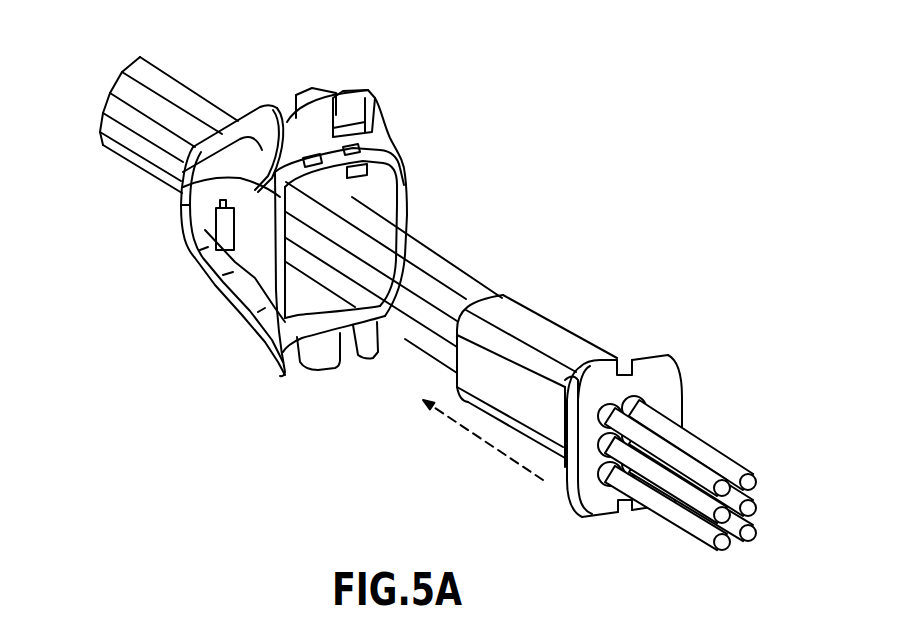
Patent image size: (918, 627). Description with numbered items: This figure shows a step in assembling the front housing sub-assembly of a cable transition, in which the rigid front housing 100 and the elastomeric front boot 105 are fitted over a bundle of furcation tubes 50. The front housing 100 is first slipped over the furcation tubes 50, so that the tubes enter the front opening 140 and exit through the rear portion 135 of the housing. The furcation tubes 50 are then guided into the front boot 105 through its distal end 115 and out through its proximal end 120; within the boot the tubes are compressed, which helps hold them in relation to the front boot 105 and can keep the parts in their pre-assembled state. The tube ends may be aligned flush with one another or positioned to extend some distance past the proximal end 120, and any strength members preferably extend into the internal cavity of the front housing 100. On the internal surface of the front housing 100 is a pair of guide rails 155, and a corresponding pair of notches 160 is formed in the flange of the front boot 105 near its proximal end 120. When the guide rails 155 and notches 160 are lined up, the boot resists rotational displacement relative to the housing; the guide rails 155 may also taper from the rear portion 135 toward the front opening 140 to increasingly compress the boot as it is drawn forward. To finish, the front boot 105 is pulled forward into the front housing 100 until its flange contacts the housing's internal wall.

The furcation tubes 50 is at (135, 175).
The front housing 100 is at (346, 84).
The front boot 105 is at (559, 309).
The distal end 115 is at (397, 424).
The proximal end 120 is at (697, 382).
The rear portion 135 is at (427, 163).
The front opening 140 is at (247, 93).
The guide rails 155 is at (360, 190).
The notches 160 is at (628, 357).